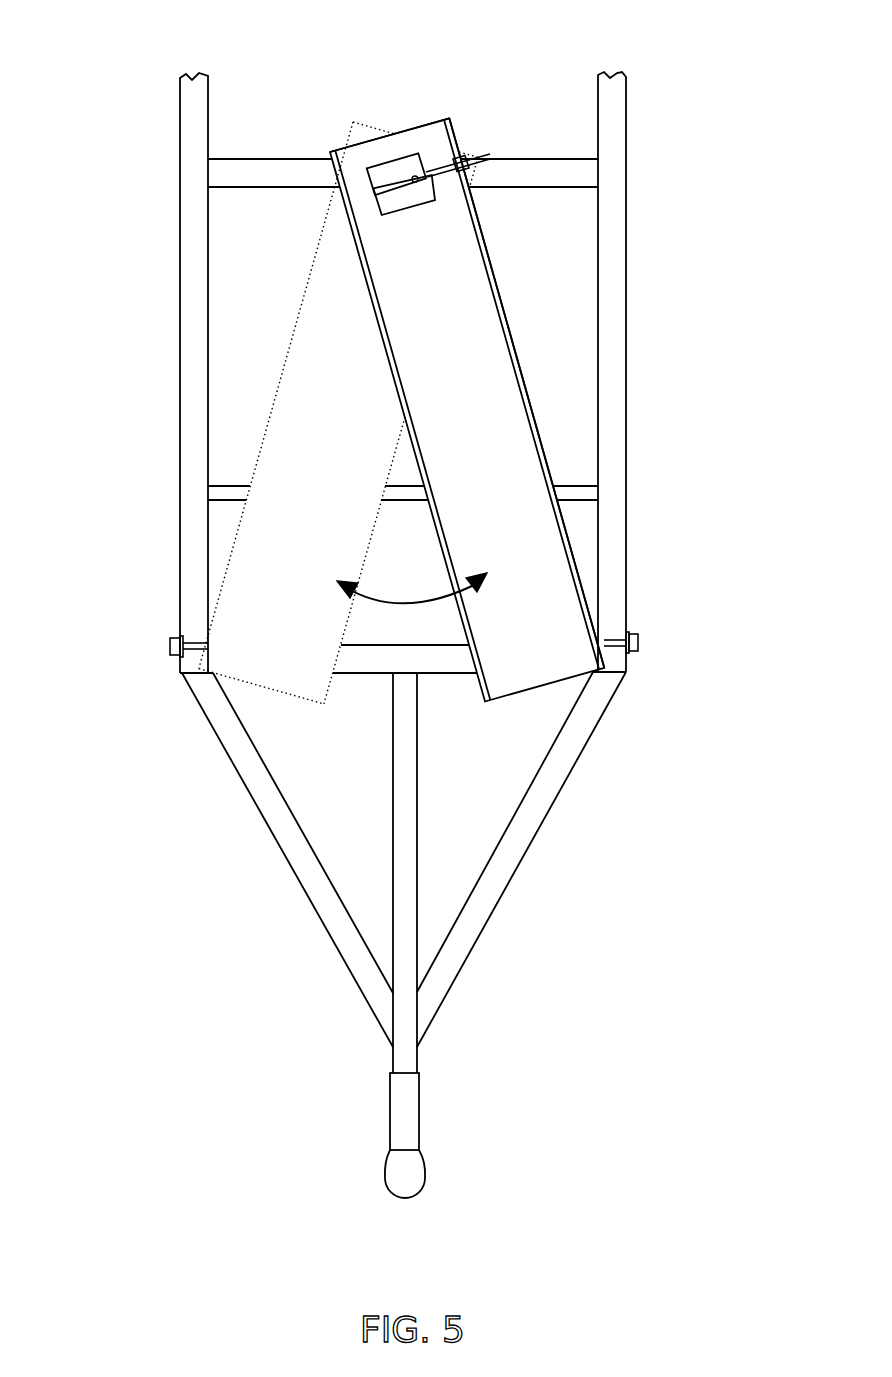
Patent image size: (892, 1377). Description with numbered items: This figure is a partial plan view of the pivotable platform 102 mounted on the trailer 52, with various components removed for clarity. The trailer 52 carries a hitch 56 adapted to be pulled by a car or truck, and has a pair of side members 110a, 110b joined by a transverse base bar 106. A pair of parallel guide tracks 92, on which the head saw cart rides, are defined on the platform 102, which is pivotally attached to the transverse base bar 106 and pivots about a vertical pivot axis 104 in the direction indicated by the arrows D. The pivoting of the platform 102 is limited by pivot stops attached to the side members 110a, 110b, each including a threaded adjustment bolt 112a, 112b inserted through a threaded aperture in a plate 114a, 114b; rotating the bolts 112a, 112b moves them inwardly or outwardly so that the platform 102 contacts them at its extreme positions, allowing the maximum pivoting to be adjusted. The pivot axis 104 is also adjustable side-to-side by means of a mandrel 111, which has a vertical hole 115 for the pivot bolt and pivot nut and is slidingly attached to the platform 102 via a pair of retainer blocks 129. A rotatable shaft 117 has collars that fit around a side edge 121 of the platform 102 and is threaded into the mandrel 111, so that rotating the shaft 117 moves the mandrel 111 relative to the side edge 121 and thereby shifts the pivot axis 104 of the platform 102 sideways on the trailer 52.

The trailer 52 is at (615, 268).
The hitch 56 is at (413, 1139).
The guide tracks 92 is at (535, 443).
The pivotable platform 102 is at (478, 375).
The vertical pivot axis 104 is at (427, 137).
The transverse base bar 106 is at (282, 176).
The side member 110a is at (187, 357).
The side member 110b is at (607, 377).
The mandrel 111 is at (383, 188).
The threaded adjustment bolt 112a is at (198, 638).
The threaded adjustment bolt 112b is at (600, 642).
The plate 114a is at (175, 657).
The plate 114b is at (633, 653).
The vertical hole 115 is at (414, 176).
The rotatable shaft 117 is at (485, 152).
The side edge 121 is at (486, 235).
The retainer blocks 129 is at (407, 203).
The arrows D is at (403, 600).